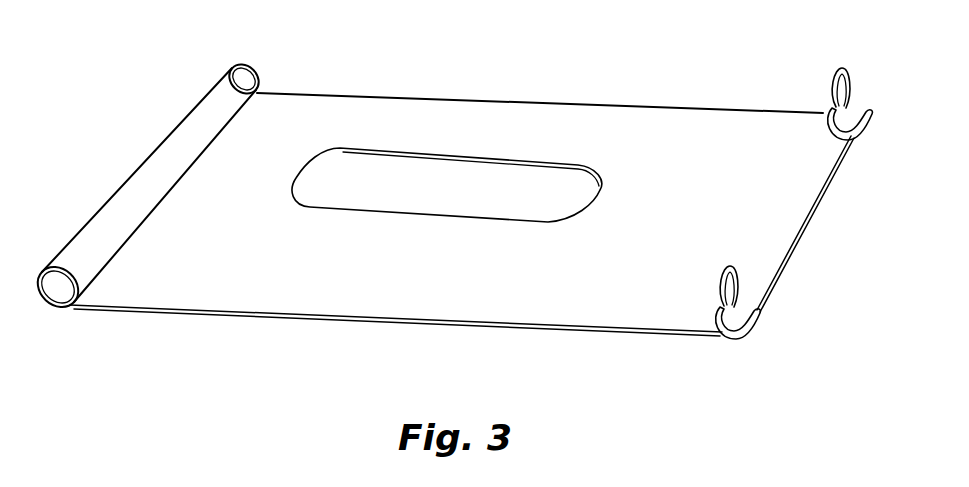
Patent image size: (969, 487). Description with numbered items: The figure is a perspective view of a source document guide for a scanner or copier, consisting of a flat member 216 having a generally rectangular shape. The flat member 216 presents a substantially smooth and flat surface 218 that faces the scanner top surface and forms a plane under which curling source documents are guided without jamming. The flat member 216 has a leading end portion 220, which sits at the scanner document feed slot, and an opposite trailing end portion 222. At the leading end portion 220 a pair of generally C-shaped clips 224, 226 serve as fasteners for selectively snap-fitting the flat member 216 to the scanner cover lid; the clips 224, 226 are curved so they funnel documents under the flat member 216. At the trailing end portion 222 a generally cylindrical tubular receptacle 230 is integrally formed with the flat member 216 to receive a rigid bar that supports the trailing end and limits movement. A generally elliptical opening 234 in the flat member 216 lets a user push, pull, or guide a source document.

The flat member 216 is at (473, 213).
The substantially smooth and flat surface 218 is at (292, 320).
The leading end portion 220 is at (762, 236).
The trailing end portion 222 is at (280, 93).
The clip 224 is at (737, 320).
The clip 226 is at (843, 108).
The tubular receptacle 230 is at (145, 152).
The opening 234 is at (458, 203).